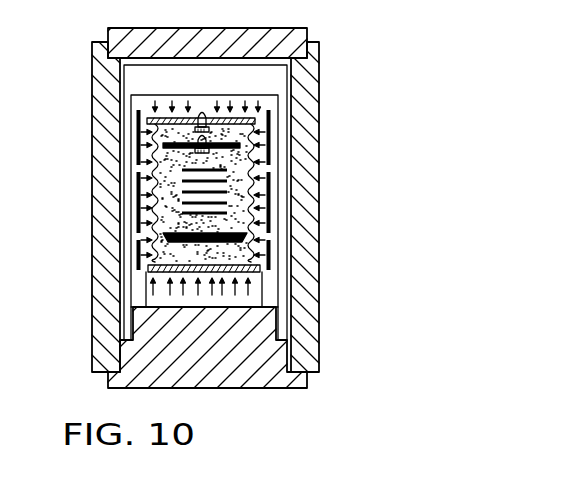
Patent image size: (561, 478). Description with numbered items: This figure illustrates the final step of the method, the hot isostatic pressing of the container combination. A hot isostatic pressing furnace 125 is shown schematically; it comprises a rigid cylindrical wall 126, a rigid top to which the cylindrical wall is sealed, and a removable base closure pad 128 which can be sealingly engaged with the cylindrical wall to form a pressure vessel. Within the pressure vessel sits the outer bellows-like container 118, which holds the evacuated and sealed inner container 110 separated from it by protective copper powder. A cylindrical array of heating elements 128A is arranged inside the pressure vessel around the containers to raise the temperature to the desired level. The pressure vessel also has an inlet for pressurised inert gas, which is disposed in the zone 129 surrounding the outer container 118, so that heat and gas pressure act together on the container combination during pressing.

The inner container 110 is at (145, 218).
The outer container 118 is at (150, 186).
The hot isostatic pressing furnace 125 is at (322, 87).
The rigid cylindrical wall 126 is at (305, 250).
The removable base closure pad 128 is at (247, 340).
The heating elements 128A is at (268, 201).
The zone 129 is at (255, 150).